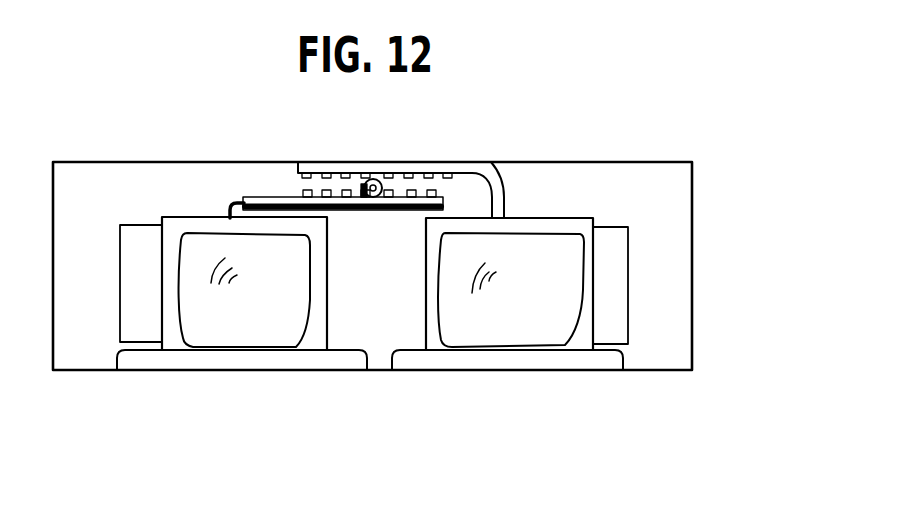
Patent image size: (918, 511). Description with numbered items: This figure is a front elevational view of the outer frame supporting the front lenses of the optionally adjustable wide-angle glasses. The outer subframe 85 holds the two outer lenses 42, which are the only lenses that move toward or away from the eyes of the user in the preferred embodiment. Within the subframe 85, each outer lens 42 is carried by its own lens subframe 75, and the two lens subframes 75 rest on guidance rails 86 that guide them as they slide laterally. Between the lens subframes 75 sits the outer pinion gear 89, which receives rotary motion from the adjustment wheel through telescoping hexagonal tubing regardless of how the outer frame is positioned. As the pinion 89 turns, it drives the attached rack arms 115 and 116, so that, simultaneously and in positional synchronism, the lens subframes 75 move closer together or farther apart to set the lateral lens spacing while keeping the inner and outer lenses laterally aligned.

The outer lenses 42 is at (230, 338).
The lens subframes 75 is at (175, 228).
The subframe 85 is at (680, 194).
The guidance rails 86 is at (428, 362).
The outer pinion gear 89 is at (386, 182).
The rack arm 115 is at (487, 175).
The rack arm 116 is at (240, 198).